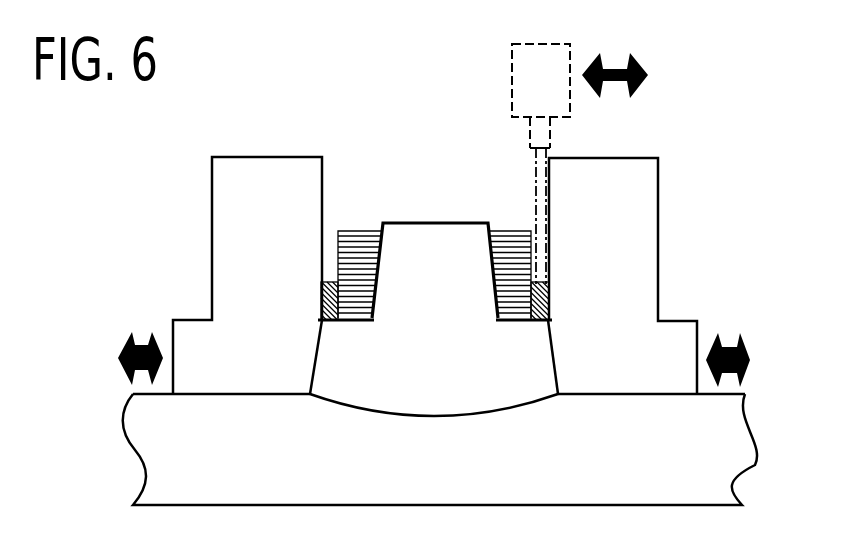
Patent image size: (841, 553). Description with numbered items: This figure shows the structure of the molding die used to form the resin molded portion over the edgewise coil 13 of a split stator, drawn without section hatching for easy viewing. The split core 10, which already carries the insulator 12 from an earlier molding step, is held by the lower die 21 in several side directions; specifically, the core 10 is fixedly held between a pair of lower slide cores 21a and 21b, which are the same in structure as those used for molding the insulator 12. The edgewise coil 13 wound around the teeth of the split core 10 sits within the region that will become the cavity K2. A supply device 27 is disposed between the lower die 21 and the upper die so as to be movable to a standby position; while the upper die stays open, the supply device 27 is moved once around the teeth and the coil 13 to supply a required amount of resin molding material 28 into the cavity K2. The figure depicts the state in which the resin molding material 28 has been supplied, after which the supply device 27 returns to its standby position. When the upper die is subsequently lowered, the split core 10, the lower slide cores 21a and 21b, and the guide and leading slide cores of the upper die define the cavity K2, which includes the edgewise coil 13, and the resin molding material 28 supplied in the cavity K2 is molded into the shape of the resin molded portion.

The split core 10 is at (423, 362).
The insulator 12 is at (549, 312).
The edgewise coil 13 is at (503, 238).
The lower die 21 is at (208, 471).
The lower slide core 21a is at (252, 223).
The lower slide core 21b is at (583, 223).
The supply device 27 is at (527, 91).
The resin molding material 28 is at (549, 287).
The cavity K2 is at (328, 281).